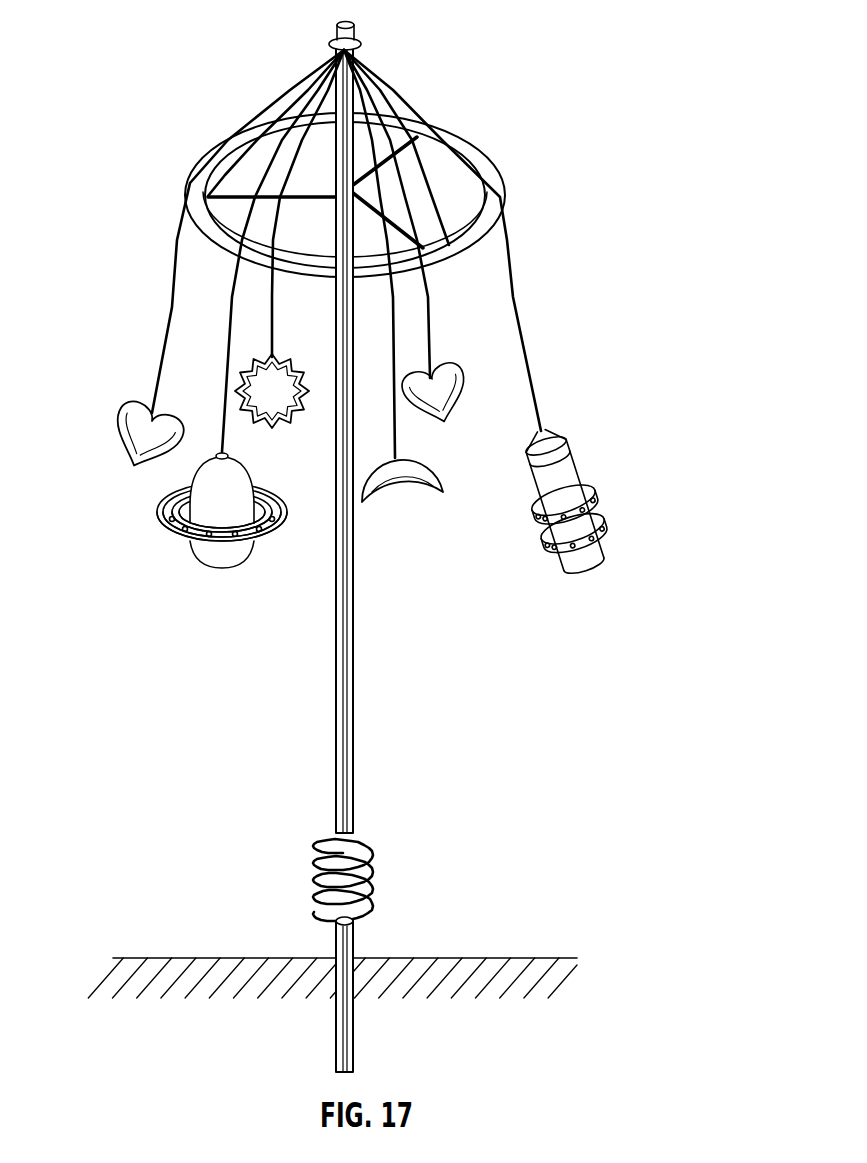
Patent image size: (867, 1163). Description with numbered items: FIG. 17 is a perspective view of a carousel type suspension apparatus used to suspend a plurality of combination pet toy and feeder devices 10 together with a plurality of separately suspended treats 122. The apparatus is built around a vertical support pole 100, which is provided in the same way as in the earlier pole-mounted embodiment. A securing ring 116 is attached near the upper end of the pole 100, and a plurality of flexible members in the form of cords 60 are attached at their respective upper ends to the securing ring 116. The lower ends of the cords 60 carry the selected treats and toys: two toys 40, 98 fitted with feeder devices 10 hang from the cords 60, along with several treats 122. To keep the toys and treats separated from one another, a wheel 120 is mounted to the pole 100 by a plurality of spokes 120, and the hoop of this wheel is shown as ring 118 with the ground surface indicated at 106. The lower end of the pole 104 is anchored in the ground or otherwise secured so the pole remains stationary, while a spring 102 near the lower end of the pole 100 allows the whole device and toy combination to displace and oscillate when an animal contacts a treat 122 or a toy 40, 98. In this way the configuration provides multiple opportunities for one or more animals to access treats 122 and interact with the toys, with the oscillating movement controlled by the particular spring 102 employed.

The combination pet toy and feeder device 10 is at (152, 528).
The toy 40 is at (220, 575).
The cord 60 is at (300, 102).
The toy 98 is at (593, 580).
The support pole 100 is at (340, 706).
The spring 102 is at (376, 878).
The lower end of the pole 104 is at (353, 1050).
The ground 106 is at (500, 958).
The securing ring 116 is at (358, 42).
The hoop ring 118 is at (200, 229).
The wheel 120 is at (205, 192).
The treats/feed 122 is at (113, 432).